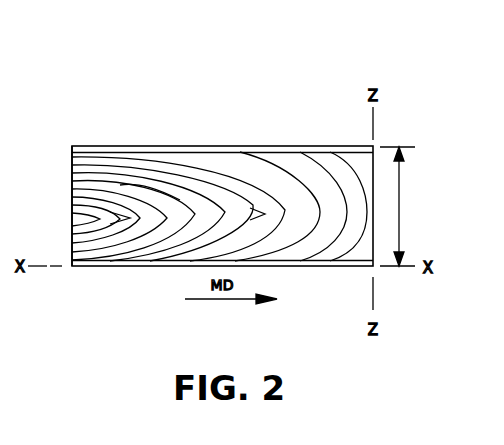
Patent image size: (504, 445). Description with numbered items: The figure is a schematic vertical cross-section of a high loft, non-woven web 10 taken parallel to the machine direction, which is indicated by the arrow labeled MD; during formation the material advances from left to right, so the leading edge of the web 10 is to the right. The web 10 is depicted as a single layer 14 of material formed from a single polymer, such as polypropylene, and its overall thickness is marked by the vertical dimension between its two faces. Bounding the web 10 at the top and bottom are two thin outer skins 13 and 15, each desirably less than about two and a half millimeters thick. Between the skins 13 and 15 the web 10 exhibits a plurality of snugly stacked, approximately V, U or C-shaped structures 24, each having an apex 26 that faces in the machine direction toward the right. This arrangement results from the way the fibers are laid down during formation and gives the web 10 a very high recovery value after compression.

The high loft, non-woven web 10 is at (346, 57).
The thin outer skin 13 is at (234, 151).
The single layer 14 is at (71, 210).
The thin outer skin 15 is at (303, 266).
The V, U or C-shaped structures 24 is at (157, 197).
The apex 26 is at (130, 218).